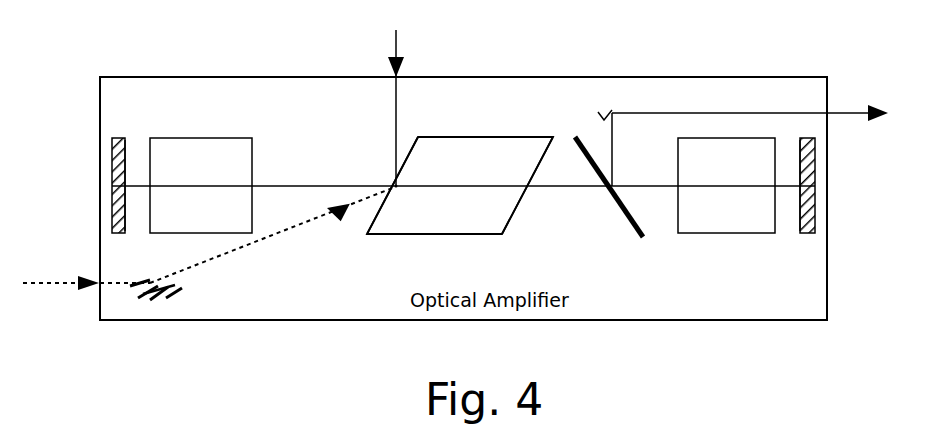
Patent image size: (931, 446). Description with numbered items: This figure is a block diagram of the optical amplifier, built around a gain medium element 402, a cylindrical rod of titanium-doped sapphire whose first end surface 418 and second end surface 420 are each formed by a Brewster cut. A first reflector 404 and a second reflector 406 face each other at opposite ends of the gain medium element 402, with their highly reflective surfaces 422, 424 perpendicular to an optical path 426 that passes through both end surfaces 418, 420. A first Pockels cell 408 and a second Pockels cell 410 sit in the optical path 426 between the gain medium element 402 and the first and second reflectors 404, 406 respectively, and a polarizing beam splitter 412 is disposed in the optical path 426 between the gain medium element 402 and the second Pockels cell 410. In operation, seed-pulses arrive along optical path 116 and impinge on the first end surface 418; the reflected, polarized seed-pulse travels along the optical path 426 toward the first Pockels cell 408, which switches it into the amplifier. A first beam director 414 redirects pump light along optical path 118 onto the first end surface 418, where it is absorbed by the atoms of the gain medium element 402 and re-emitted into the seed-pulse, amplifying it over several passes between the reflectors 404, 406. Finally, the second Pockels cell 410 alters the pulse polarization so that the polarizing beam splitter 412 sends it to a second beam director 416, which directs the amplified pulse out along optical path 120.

The optical path 116 is at (396, 38).
The optical path 118 is at (262, 241).
The optical path 120 is at (850, 112).
The gain medium element 402 is at (466, 137).
The first reflector 404 is at (118, 138).
The second reflector 406 is at (806, 234).
The first Pockels cell 408 is at (252, 160).
The second Pockels cell 410 is at (677, 148).
The polarizing beam splitter 412 is at (622, 216).
The first beam director 414 is at (183, 288).
The second beam director 416 is at (604, 118).
The first end surface 418 is at (373, 216).
The second end surface 420 is at (518, 204).
The highly reflective surface 422 is at (126, 140).
The highly reflective surface 424 is at (796, 214).
The optical path 426 is at (342, 186).